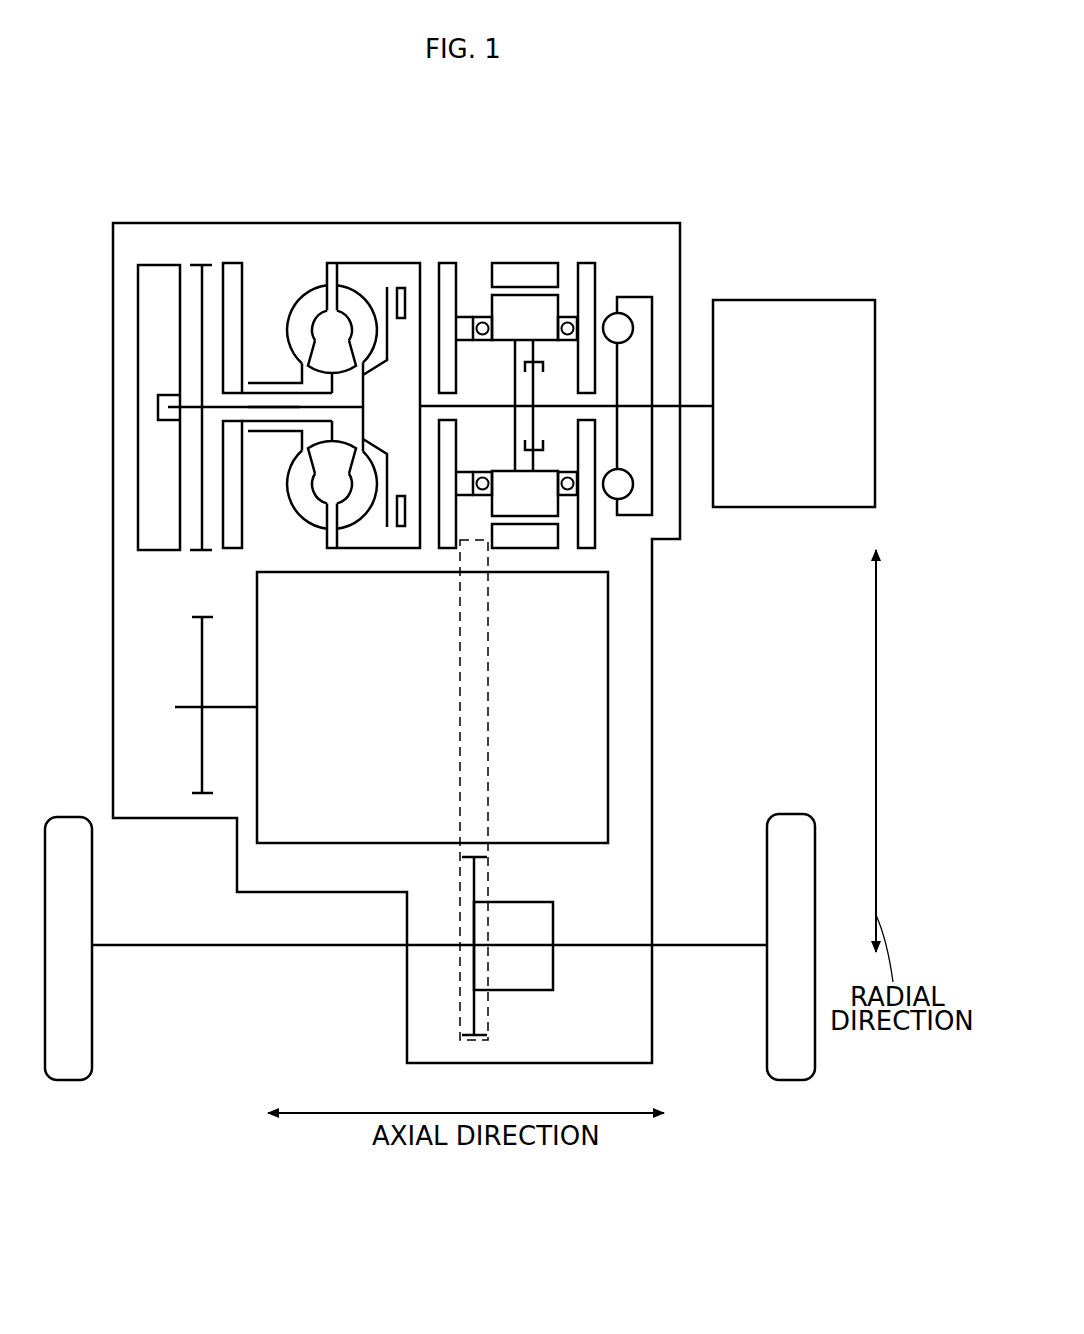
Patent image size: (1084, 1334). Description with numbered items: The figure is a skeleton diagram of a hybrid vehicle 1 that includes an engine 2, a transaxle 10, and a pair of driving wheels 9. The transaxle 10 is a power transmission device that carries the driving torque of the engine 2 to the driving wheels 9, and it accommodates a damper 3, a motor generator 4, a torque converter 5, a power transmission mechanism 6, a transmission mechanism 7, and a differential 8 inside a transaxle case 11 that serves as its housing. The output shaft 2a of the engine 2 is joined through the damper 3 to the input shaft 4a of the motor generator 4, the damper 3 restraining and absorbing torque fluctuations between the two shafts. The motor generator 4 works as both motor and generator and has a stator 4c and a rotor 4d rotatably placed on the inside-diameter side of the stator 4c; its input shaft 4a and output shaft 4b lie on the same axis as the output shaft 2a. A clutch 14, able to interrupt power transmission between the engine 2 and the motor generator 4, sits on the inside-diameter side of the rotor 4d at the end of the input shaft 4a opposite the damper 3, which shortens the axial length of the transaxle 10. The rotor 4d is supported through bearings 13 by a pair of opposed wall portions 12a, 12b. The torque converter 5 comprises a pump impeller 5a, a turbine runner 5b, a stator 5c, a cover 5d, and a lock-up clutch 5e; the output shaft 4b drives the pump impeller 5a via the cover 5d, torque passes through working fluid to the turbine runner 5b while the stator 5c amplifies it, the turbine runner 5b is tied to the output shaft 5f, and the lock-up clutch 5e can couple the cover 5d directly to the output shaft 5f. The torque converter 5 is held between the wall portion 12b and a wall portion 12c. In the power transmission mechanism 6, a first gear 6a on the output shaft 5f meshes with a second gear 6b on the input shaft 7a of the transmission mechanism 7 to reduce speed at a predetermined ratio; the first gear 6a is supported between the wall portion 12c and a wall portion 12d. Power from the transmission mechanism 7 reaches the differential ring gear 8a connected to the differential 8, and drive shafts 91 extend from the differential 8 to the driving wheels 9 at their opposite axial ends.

The hybrid vehicle 1 is at (695, 135).
The engine 2 is at (803, 300).
The output shaft 2a is at (665, 402).
The damper 3 is at (630, 297).
The motor generator 4 is at (591, 365).
The input shaft 4a is at (565, 405).
The output shaft 4b is at (483, 405).
The stator 4c is at (505, 263).
The rotor 4d is at (558, 508).
The torque converter 5 is at (339, 353).
The pump impeller 5a is at (307, 290).
The turbine runner 5b is at (358, 291).
The stator 5c is at (322, 363).
The cover 5d is at (338, 263).
The lock-up clutch 5e is at (404, 282).
The output shaft 5f is at (272, 402).
The power transmission mechanism 6 is at (188, 472).
The first gear 6a is at (197, 551).
The second gear 6b is at (196, 619).
The transmission mechanism 7 is at (612, 748).
The input shaft 7a is at (230, 709).
The differential 8 is at (554, 920).
The differential ring gear 8a is at (465, 859).
The driving wheels 9 is at (66, 816).
The transaxle 10 is at (603, 185).
The transaxle case 11 is at (682, 250).
The wall portion 12a is at (583, 263).
The wall portion 12b is at (447, 263).
The wall portion 12c is at (232, 263).
The wall portion 12d is at (155, 265).
The bearings 13 is at (562, 470).
The clutch 14 is at (523, 445).
The drive shafts 91 is at (222, 948).